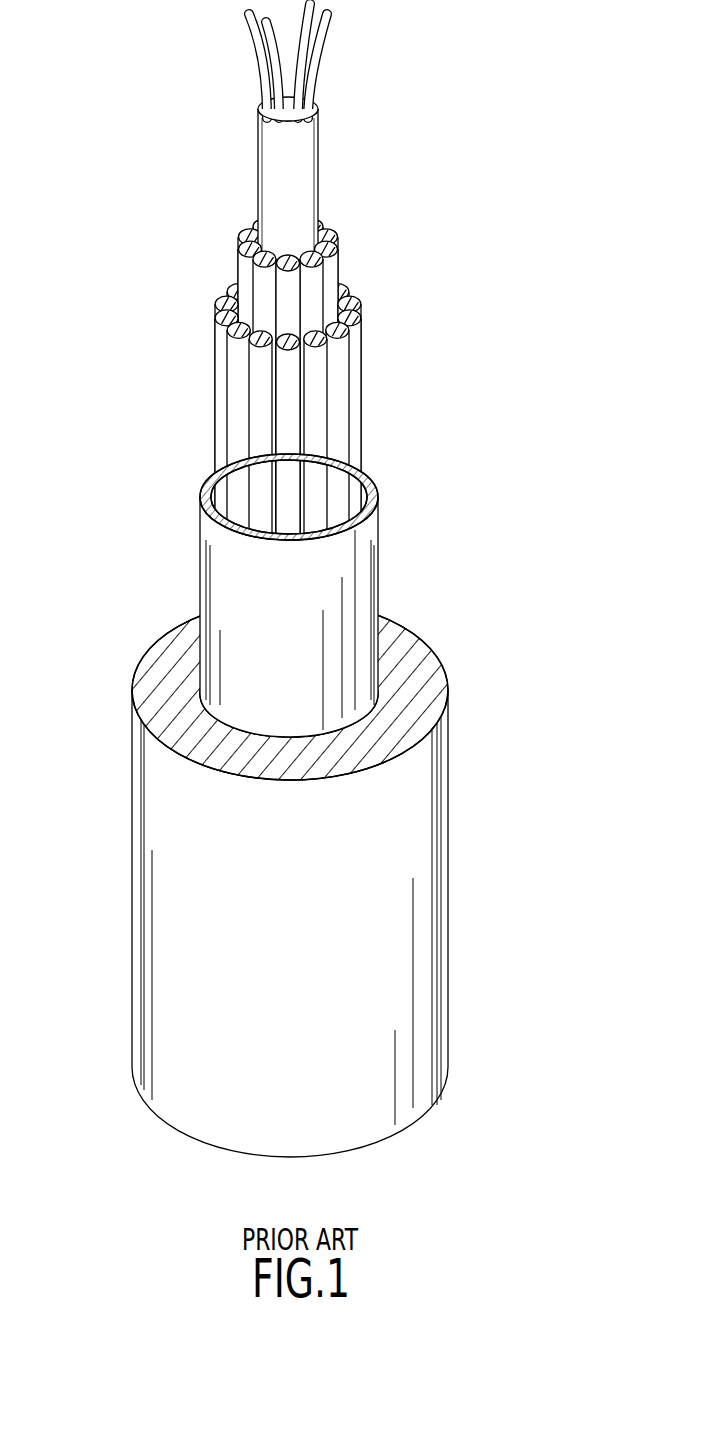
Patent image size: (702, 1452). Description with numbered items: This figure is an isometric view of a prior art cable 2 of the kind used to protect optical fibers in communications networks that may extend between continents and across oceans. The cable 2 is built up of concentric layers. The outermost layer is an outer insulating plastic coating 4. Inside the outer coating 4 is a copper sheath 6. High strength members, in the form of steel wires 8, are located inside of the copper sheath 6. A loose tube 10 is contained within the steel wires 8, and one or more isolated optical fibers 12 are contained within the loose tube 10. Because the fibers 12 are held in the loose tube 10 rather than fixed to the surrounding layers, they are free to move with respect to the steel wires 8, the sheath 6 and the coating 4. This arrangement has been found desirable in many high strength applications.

The cable 2 is at (298, 580).
The outer insulating plastic coating 4 is at (448, 895).
The copper sheath 6 is at (313, 370).
The steel wires 8 is at (299, 272).
The loose tube 10 is at (247, 131).
The optical fibers 12 is at (260, 72).